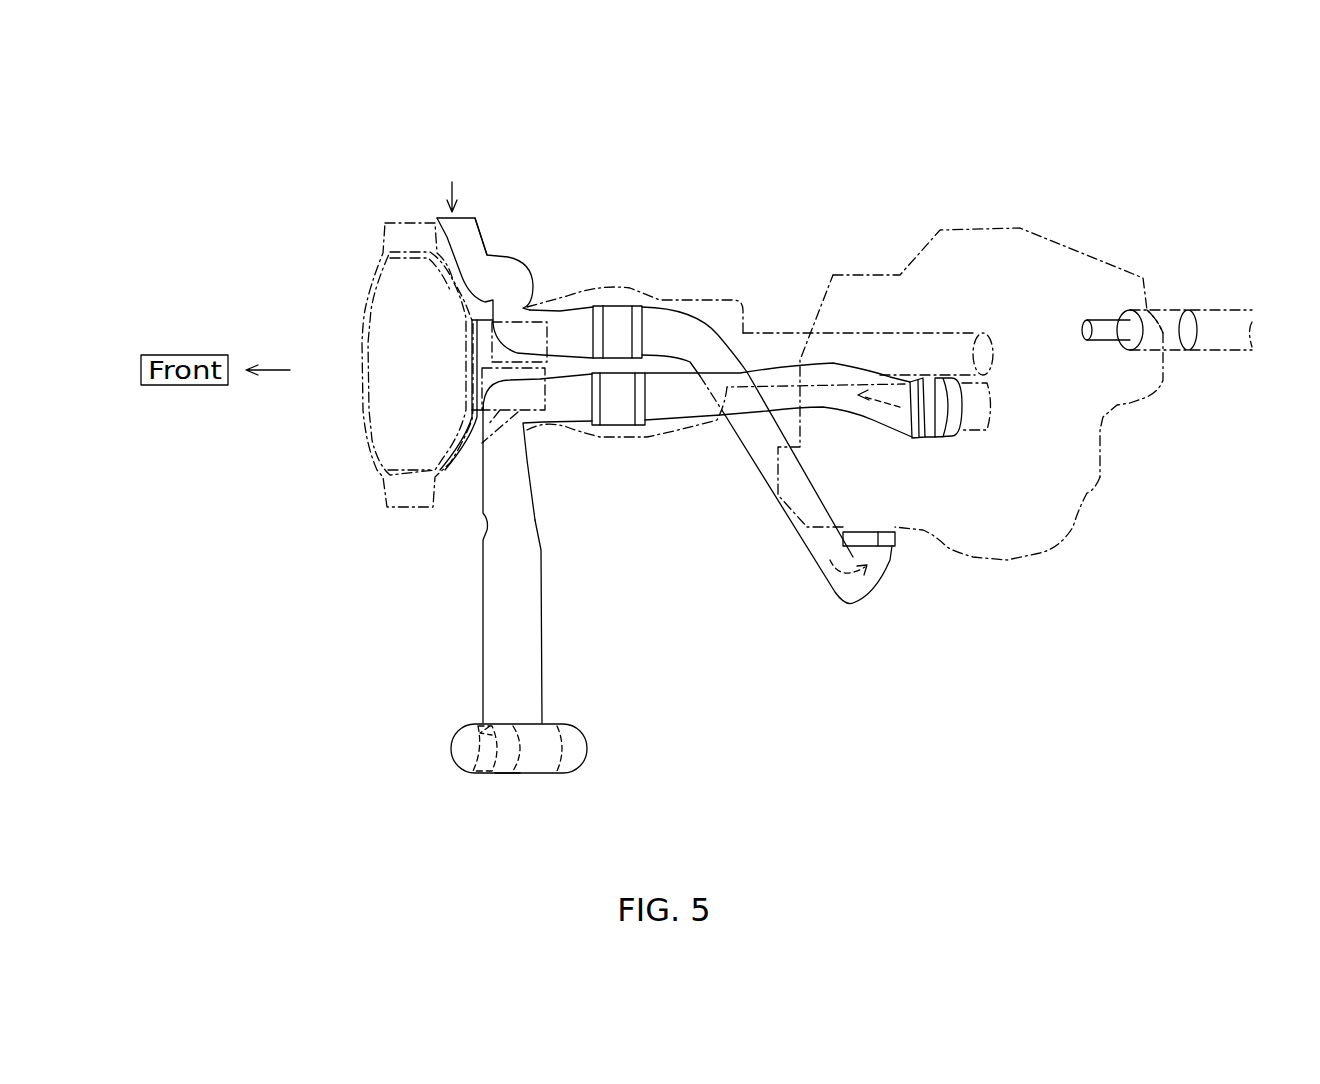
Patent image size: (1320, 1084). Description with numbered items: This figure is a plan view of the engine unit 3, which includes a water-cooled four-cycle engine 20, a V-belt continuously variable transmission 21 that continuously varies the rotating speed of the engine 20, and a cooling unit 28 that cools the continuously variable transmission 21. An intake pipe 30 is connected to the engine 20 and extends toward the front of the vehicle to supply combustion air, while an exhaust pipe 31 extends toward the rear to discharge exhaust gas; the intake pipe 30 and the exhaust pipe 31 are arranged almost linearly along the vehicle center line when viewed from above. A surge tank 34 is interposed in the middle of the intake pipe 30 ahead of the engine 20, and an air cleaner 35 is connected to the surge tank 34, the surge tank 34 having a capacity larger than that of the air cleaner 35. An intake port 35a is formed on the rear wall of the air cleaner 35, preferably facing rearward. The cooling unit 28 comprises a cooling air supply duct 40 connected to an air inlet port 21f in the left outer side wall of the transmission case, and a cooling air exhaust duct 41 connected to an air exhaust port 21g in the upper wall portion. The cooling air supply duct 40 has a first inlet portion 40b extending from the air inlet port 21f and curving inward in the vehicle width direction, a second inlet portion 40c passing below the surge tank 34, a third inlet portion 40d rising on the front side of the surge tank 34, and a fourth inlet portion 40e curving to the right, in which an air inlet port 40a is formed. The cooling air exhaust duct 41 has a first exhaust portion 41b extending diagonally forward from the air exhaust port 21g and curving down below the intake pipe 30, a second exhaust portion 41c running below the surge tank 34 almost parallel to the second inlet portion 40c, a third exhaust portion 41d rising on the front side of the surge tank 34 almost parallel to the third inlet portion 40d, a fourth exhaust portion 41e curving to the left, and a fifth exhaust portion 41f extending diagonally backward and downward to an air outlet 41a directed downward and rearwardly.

The engine unit 3 is at (1093, 250).
The engine 20 is at (1153, 398).
The V-belt continuously variable transmission 21 is at (1001, 438).
The air inlet port 21f is at (890, 546).
The air exhaust port 21g is at (930, 438).
The cooling unit 28 is at (630, 223).
The intake pipe 30 is at (880, 333).
The exhaust pipe 31 is at (1223, 307).
The surge tank 34 is at (711, 296).
The air cleaner 35 is at (364, 309).
The intake port 35a is at (535, 413).
The cooling air supply duct 40 is at (692, 403).
The air inlet port 40a is at (465, 217).
The first inlet portion 40b is at (778, 510).
The second inlet portion 40c is at (650, 306).
The third inlet portion 40d is at (541, 308).
The fourth inlet portion 40e is at (485, 237).
The cooling air exhaust duct 41 is at (721, 533).
The air outlet 41a is at (587, 747).
The first exhaust portion 41b is at (823, 413).
The second exhaust portion 41c is at (652, 425).
The third exhaust portion 41d is at (523, 426).
The fourth exhaust portion 41e is at (543, 655).
The fifth exhaust portion 41f is at (503, 774).